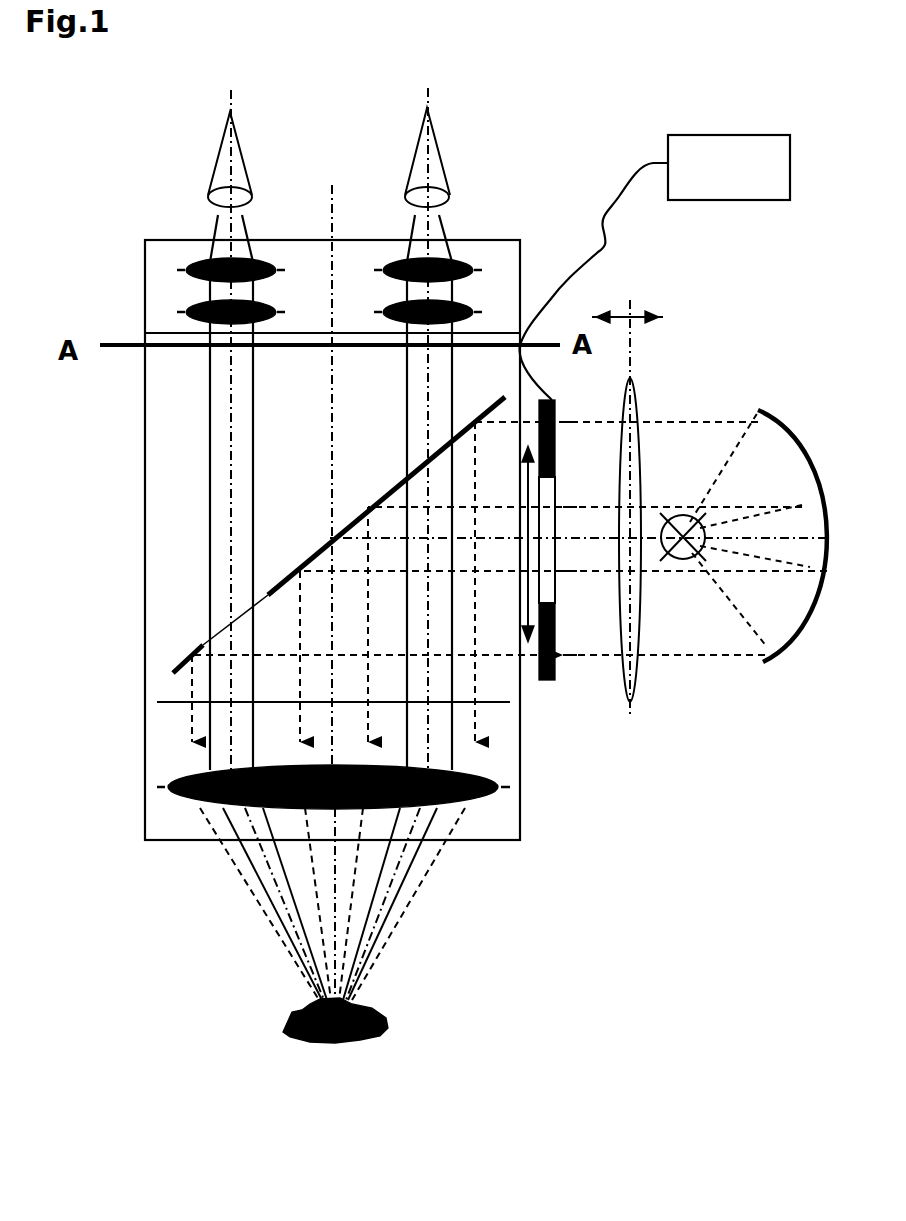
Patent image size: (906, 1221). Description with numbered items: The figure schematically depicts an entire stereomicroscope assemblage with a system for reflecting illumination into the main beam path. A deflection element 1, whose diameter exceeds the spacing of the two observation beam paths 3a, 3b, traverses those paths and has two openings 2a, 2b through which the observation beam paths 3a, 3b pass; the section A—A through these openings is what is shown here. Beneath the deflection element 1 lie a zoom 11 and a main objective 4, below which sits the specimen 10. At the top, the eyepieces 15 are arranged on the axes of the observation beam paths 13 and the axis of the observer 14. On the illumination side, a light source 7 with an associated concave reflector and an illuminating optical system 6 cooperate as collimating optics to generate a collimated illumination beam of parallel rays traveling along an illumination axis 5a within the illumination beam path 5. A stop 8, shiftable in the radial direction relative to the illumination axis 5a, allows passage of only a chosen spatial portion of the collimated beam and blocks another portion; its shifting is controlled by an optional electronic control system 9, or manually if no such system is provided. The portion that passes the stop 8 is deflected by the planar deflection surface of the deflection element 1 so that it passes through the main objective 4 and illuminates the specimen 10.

The deflection element 1 is at (178, 663).
The opening 2a is at (407, 406).
The opening 2b is at (245, 608).
The observation beam path 3a is at (420, 462).
The observation beam path 3b is at (210, 458).
The main objective 4 is at (482, 795).
The illumination beam path 5 is at (660, 463).
The illumination axis 5a is at (650, 537).
The illuminating optical system 6 is at (636, 682).
The light source 7 is at (690, 552).
The stop 8 is at (556, 672).
The electronic control system 9 is at (655, 267).
The specimen 10 is at (295, 1013).
The zoom 11 is at (228, 702).
The axes of observation beam paths 13 is at (234, 410).
The axis of observer 14 is at (207, 155).
The eyepieces 15 is at (190, 267).